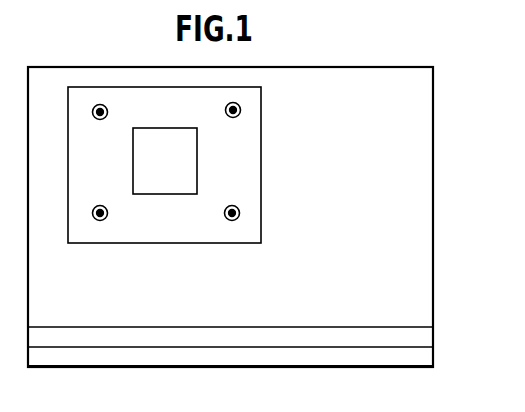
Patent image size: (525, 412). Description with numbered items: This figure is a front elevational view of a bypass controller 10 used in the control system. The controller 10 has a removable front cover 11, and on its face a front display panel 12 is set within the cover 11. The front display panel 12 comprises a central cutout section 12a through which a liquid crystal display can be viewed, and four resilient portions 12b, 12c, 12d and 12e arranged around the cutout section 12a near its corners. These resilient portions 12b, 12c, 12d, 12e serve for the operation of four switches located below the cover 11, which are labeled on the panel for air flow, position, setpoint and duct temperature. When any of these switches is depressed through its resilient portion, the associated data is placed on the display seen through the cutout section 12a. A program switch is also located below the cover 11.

The bypass controller 10 is at (362, 64).
The removable front cover 11 is at (434, 148).
The front display panel 12 is at (261, 149).
The cutout section 12a is at (181, 169).
The resilient portion 12b is at (92, 112).
The resilient portion 12c is at (92, 213).
The resilient portion 12d is at (240, 214).
The resilient portion 12e is at (241, 109).